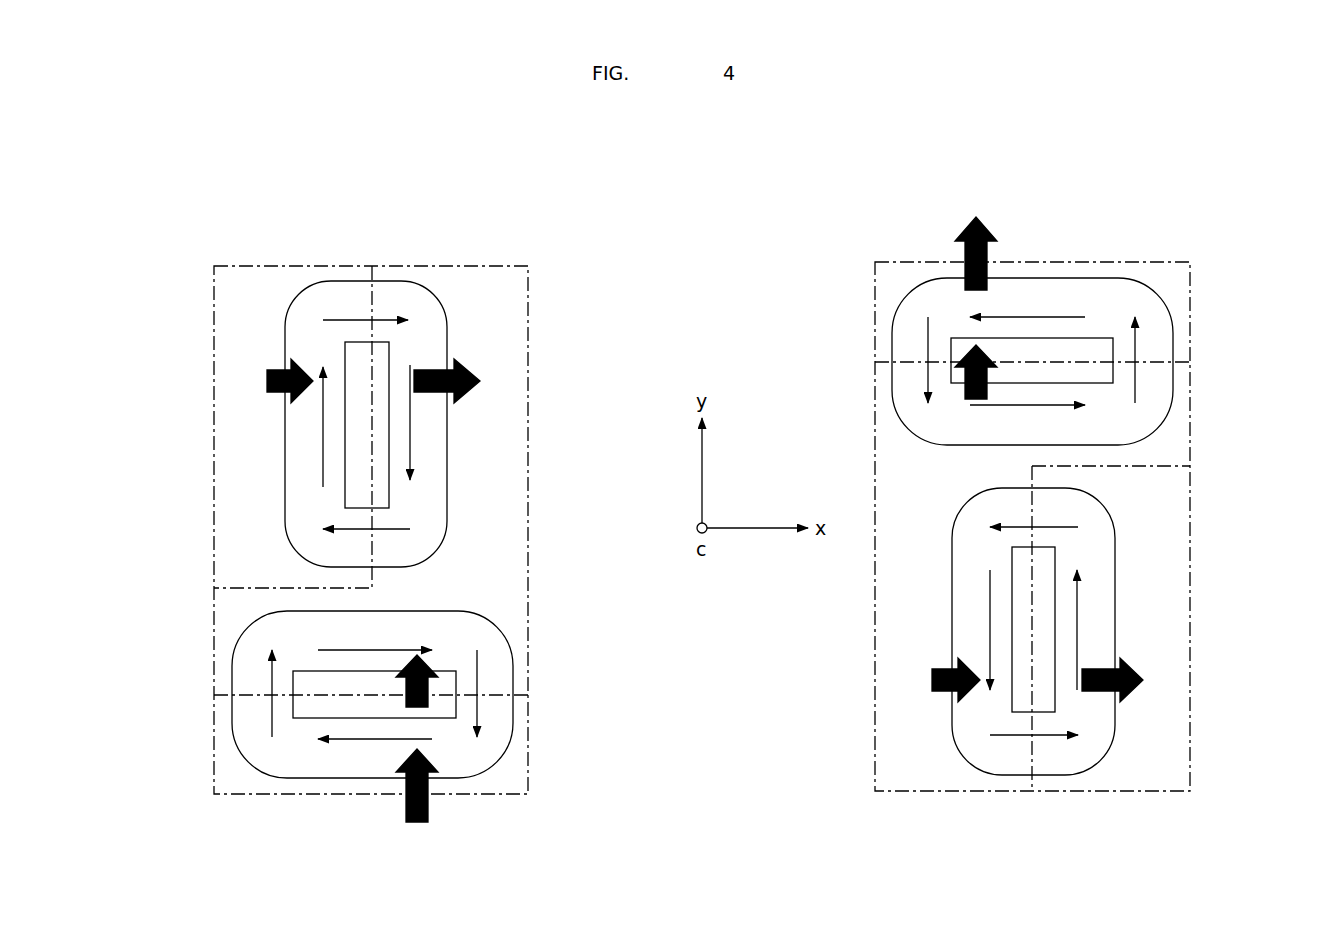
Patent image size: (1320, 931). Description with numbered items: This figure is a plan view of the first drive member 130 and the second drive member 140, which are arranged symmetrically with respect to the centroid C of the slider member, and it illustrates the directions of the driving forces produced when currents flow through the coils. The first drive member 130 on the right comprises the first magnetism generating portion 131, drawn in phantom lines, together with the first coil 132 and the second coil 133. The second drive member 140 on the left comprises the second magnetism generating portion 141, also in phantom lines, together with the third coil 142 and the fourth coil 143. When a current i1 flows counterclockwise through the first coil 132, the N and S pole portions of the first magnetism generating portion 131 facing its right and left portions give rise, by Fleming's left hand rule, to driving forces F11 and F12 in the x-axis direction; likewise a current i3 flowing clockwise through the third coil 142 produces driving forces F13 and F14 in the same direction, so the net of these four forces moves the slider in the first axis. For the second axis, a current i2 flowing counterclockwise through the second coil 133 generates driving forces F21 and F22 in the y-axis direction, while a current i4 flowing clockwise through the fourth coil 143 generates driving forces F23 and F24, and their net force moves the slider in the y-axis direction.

The first drive member 130 is at (1188, 231).
The first magnetism generating portion 131 is at (1175, 287).
The first coil 132 is at (1097, 531).
The second coil 133 is at (1158, 345).
The second drive member 140 is at (508, 235).
The second magnetism generating portion 141 is at (240, 290).
The third coil 142 is at (300, 331).
The fourth coil 143 is at (244, 678).
The current i1 is at (1078, 597).
The current i2 is at (1020, 316).
The current i3 is at (323, 470).
The current i4 is at (330, 648).
The driving force F11 is at (934, 680).
The driving force F12 is at (1132, 680).
The driving force F13 is at (466, 381).
The driving force F14 is at (267, 381).
The driving force F21 is at (976, 240).
The driving force F22 is at (976, 392).
The driving force F23 is at (417, 696).
The driving force F24 is at (417, 803).